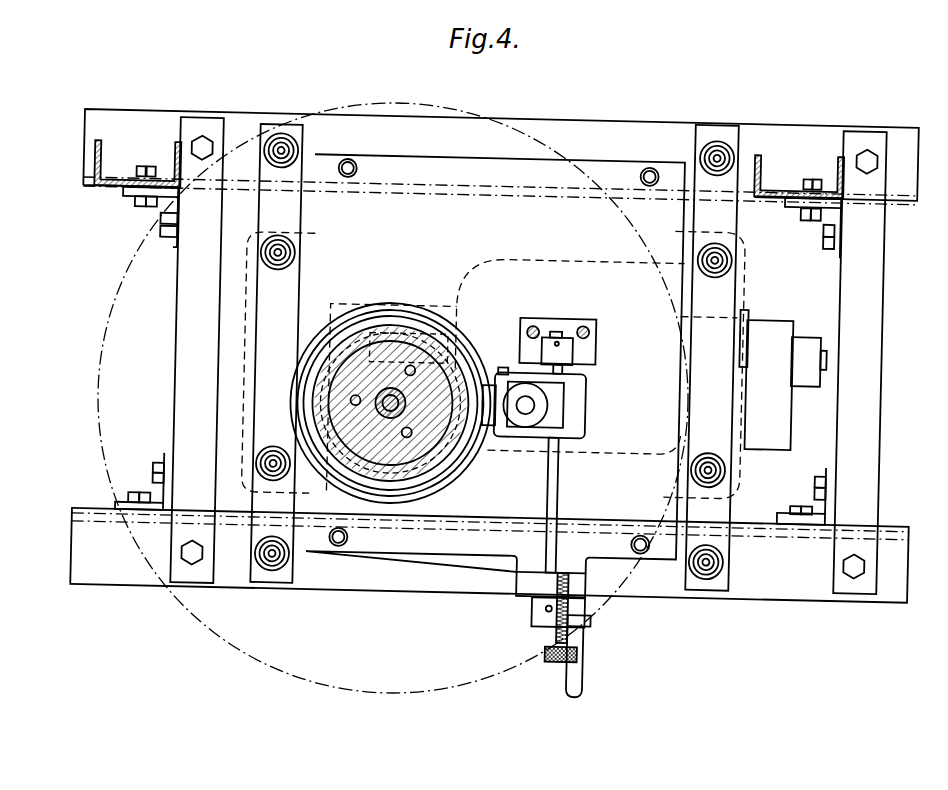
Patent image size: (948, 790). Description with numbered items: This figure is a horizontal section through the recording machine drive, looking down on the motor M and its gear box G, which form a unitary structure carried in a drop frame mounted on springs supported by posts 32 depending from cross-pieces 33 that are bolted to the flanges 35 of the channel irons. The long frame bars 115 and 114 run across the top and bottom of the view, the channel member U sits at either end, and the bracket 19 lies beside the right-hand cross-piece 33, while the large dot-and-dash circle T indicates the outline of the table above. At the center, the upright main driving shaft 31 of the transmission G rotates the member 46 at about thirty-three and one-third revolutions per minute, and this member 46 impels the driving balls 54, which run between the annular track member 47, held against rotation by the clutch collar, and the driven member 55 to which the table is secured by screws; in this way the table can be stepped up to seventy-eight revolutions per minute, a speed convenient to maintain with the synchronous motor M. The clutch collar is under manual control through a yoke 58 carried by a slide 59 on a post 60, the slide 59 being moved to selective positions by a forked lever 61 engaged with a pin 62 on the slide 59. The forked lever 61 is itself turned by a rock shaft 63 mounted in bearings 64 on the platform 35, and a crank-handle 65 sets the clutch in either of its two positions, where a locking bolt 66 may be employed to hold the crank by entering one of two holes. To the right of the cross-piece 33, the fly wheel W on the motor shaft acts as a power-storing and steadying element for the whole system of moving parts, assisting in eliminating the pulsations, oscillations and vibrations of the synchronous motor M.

The upper frame bar 115 is at (150, 120).
The lower frame bar 114 is at (78, 556).
The channel member U is at (95, 157).
The cross-piece 33 is at (263, 211).
The post 32 is at (278, 252).
The flange 35 is at (466, 167).
The motor M is at (575, 259).
The gear box G is at (443, 303).
The turntable circle T is at (100, 363).
The bracket 19 is at (735, 413).
The fly wheel W is at (780, 430).
The annular track member 47 is at (297, 382).
The member 46 is at (322, 355).
The yoke 58 is at (472, 380).
The driving ball 54 is at (352, 330).
The driven member 55 is at (392, 386).
The upright main driving shaft 31 is at (396, 392).
The pin 62 is at (502, 367).
The forked lever 61 is at (572, 415).
The slide 59 is at (522, 418).
The post 60 is at (527, 410).
The bearing 64 is at (562, 358).
The rock shaft 63 is at (558, 484).
The crank-handle 65 is at (580, 627).
The locking bolt 66 is at (560, 658).